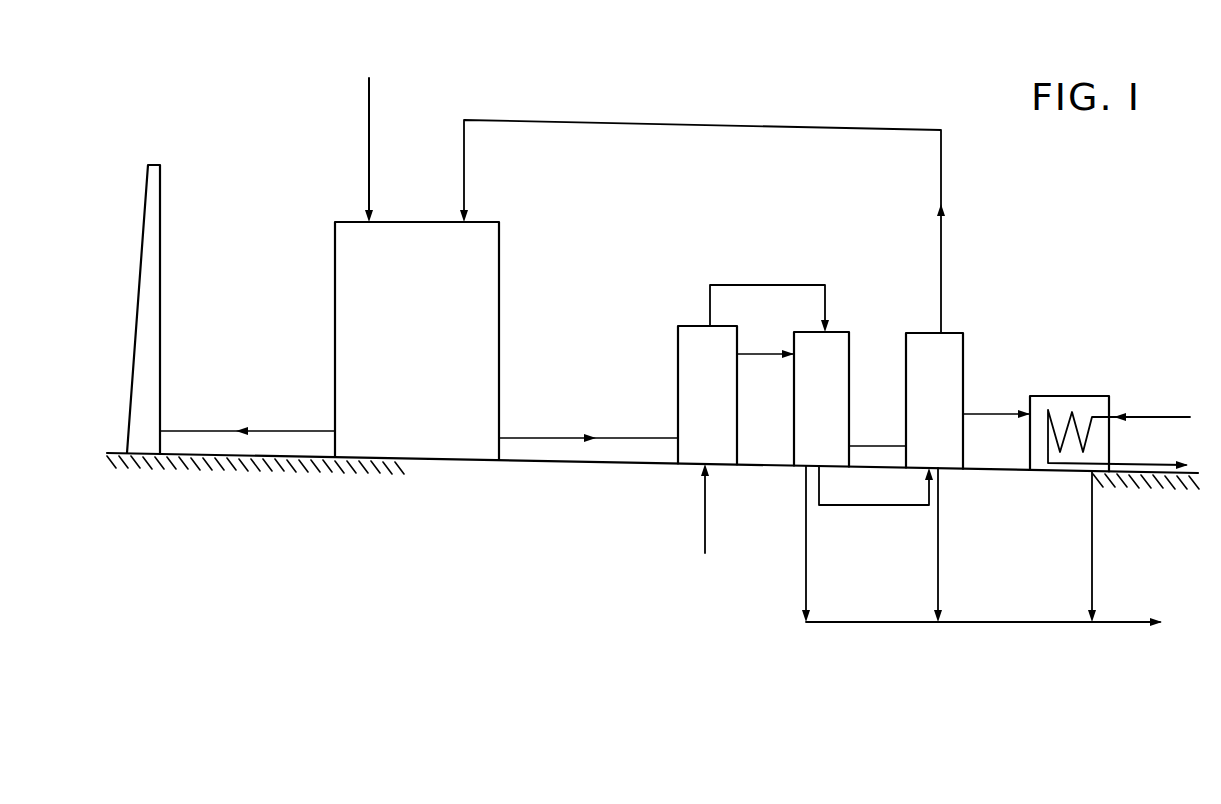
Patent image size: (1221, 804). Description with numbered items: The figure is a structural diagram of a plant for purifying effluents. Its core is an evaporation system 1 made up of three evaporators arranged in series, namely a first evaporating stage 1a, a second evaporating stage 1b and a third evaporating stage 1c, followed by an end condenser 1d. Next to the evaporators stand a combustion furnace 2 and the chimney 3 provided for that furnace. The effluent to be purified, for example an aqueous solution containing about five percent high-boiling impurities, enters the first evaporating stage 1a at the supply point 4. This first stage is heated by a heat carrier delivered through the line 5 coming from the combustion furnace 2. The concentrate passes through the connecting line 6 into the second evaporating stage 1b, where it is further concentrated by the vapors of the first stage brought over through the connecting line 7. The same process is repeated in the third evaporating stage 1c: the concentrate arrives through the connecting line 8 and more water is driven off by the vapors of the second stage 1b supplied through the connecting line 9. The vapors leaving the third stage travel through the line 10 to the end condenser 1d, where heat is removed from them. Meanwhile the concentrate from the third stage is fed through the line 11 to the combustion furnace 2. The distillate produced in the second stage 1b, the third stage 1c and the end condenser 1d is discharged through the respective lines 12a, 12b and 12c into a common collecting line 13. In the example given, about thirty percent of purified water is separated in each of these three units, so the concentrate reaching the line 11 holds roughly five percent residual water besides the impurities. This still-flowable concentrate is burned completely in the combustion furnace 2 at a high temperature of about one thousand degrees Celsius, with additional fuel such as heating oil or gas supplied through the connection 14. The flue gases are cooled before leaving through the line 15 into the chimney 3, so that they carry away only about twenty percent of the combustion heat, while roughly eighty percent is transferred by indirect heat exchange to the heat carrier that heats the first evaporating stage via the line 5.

The evaporation system 1 is at (850, 299).
The first evaporating stage 1a is at (680, 387).
The second evaporating stage 1b is at (795, 388).
The third evaporating stage 1c is at (913, 388).
The end condenser 1d is at (1072, 398).
The combustion furnace 2 is at (504, 306).
The chimney 3 is at (162, 256).
The effluent supply 4 is at (704, 521).
The heat carrier line 5 is at (562, 437).
The connecting line 6 is at (775, 284).
The connecting line 7 is at (760, 352).
The connecting line 8 is at (876, 508).
The connecting line 9 is at (860, 445).
The vapor line 10 is at (990, 412).
The concentrate line 11 is at (668, 124).
The distillate line 12a is at (805, 575).
The distillate line 12b is at (938, 576).
The distillate line 12c is at (1091, 568).
The collecting line 13 is at (1017, 625).
The fuel connection 14 is at (370, 131).
The flue gas line 15 is at (282, 434).